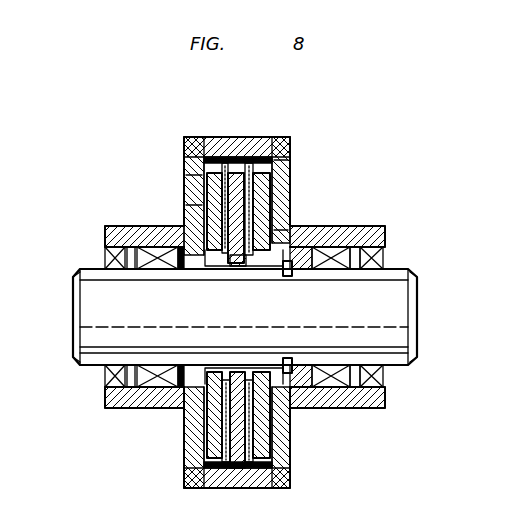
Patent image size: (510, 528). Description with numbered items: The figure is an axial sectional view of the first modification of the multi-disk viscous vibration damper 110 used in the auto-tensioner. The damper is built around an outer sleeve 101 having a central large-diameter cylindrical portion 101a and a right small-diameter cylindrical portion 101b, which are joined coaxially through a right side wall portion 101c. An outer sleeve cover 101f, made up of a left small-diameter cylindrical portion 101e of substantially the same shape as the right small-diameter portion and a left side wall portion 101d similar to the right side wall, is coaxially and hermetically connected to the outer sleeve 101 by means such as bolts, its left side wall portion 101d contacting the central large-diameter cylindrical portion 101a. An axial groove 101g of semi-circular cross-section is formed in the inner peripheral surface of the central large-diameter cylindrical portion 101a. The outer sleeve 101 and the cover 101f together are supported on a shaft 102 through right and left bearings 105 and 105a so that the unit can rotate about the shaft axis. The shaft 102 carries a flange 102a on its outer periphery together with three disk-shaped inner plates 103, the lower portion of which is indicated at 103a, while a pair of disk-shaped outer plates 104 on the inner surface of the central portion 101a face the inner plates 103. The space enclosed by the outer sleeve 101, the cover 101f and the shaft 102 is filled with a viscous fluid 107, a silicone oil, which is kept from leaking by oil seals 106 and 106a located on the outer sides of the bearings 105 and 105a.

The first modification of the multi-disk viscous vibration damper 110 is at (378, 117).
The outer sleeve 101 is at (292, 180).
The central large-diameter cylindrical portion 101a is at (217, 147).
The right small-diameter cylindrical portion 101b is at (298, 244).
The right side wall portion 101c is at (284, 178).
The left side wall portion 101d is at (188, 177).
The left small-diameter cylindrical portion 101e is at (133, 234).
The outer sleeve cover 101f is at (186, 204).
The axial groove 101g is at (292, 138).
The shaft 102 is at (398, 290).
The flange 102a is at (288, 377).
The inner plates 103 is at (258, 175).
The coil end 103a is at (208, 250).
The outer plates 104 is at (232, 161).
The right bearing 105 is at (352, 236).
The left bearing 105a is at (157, 390).
The oil seal 106 is at (378, 254).
The oil seal 106a is at (107, 382).
The viscous fluid 107 is at (308, 240).